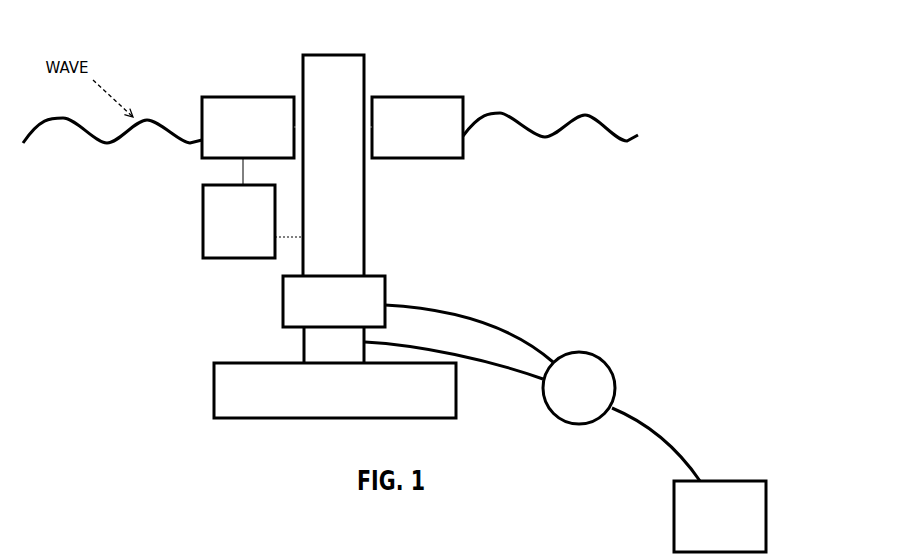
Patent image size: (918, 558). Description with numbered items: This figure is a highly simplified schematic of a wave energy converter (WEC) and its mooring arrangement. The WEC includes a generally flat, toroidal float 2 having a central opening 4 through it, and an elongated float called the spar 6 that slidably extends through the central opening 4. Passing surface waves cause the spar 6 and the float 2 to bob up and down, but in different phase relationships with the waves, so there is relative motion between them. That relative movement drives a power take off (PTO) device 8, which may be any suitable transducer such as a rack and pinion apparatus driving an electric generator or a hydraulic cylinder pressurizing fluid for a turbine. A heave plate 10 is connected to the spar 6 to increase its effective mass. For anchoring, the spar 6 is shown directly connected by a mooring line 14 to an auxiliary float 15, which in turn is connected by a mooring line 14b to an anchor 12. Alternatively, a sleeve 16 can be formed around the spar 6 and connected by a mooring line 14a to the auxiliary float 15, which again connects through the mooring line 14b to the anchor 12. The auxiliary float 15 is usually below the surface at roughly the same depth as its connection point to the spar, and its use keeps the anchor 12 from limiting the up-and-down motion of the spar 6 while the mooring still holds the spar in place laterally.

The float 2 is at (222, 88).
The central opening 4 is at (292, 85).
The spar 6 is at (334, 45).
The power take off device 8 is at (195, 228).
The heave plate 10 is at (243, 357).
The anchor 12 is at (746, 470).
The mooring line 14 is at (494, 376).
The mooring line 14a is at (483, 311).
The mooring line 14b is at (656, 430).
The auxiliary float 15 is at (616, 362).
The sleeve 16 is at (394, 283).